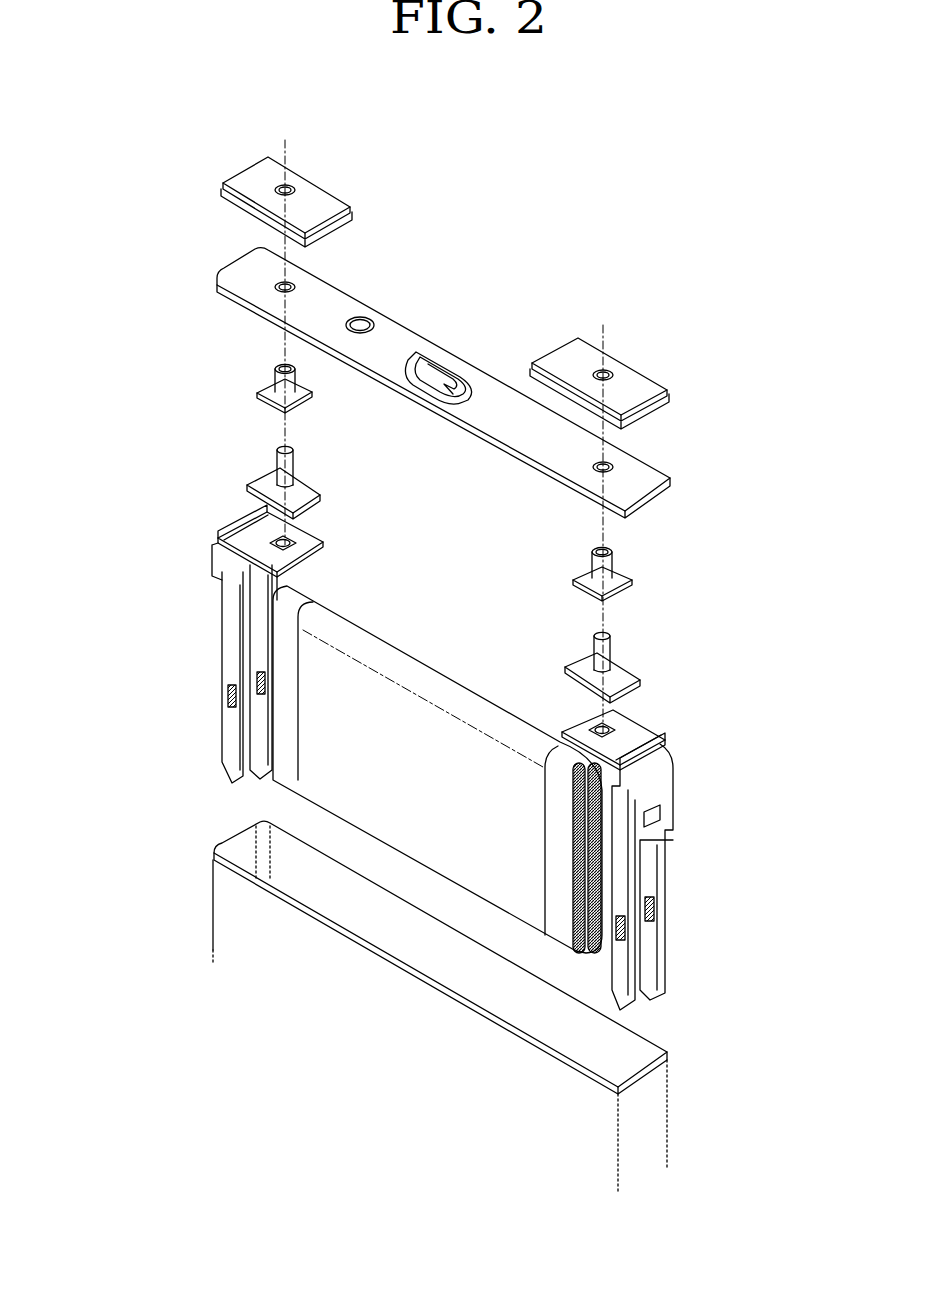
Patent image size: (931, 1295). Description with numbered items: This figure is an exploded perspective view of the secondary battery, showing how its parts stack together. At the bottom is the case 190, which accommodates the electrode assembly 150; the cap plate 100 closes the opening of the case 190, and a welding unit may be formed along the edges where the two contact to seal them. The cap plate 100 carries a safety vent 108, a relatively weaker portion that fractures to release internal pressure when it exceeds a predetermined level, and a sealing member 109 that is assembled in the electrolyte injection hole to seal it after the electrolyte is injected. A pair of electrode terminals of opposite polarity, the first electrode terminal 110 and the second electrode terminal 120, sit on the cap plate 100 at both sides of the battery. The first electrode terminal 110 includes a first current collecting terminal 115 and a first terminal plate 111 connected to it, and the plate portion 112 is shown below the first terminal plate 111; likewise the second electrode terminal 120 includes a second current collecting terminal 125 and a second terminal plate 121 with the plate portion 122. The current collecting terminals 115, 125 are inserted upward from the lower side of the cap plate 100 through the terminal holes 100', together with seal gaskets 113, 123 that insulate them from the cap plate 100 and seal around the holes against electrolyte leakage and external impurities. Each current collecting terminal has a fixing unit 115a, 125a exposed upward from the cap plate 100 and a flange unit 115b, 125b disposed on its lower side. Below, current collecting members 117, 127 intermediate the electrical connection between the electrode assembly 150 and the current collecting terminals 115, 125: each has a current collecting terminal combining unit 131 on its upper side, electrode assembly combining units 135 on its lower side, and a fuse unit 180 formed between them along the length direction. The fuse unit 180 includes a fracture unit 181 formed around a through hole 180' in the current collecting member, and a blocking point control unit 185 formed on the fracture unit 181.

The cap plate 100 is at (440, 363).
The terminal hole 100' is at (440, 375).
The safety vent 108 is at (445, 362).
The sealing member 109 is at (363, 320).
The first electrode terminal 110 is at (644, 351).
The first terminal plate 111 is at (565, 350).
The lower plate of second terminal plate 112 is at (667, 397).
The seal gasket 113 is at (625, 575).
The first current collecting terminal 115 is at (664, 655).
The first current collecting terminal fixing unit 115a is at (615, 637).
The first current collecting terminal flange unit 115b is at (625, 675).
The current collecting member 117 is at (675, 950).
The second electrode terminal 120 is at (331, 168).
The second terminal plate 121 is at (258, 172).
The lower plate of first terminal plate 122 is at (357, 217).
The seal gasket 123 is at (270, 387).
The second current collecting terminal 125 is at (222, 465).
The second current collecting terminal fixing unit 125a is at (277, 447).
The second current collecting terminal flange unit 125b is at (267, 482).
The current collecting member 127 is at (212, 677).
The current collecting terminal combining unit 131 is at (297, 535).
The electrode assembly combining unit 135 is at (226, 700).
The electrode assembly 150 is at (422, 677).
The fuse unit 180 is at (438, 744).
The through hole 180' is at (442, 744).
The fracture unit 181 is at (230, 537).
The blocking point control unit 185 is at (227, 540).
The case 190 is at (222, 835).